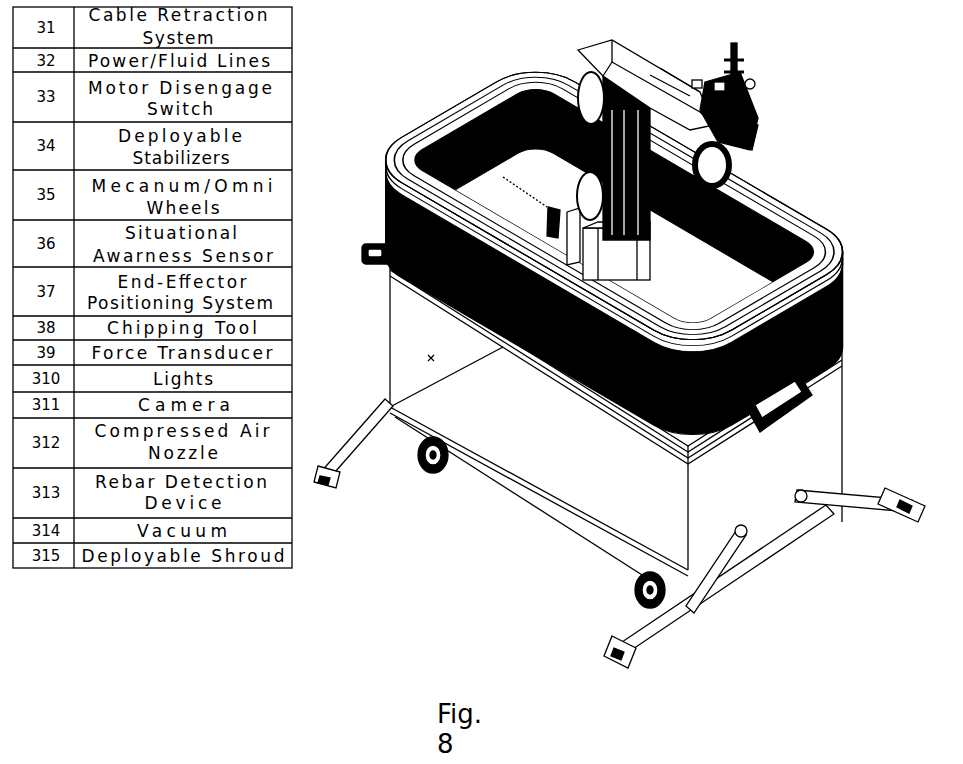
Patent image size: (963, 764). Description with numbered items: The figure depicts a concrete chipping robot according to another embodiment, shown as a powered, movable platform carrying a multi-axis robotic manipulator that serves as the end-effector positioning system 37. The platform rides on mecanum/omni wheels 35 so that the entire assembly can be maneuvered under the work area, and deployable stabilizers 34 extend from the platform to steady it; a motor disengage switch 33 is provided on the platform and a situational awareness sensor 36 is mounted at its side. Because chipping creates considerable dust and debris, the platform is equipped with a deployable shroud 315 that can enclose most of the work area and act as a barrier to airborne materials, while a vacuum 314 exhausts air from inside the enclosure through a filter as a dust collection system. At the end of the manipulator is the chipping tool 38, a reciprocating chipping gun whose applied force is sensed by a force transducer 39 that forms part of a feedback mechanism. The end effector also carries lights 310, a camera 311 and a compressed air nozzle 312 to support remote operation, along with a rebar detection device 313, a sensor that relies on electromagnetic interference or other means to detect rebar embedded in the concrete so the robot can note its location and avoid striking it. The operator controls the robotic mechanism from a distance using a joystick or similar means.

The motor disengage switch 33 is at (351, 229).
The deployable stabilizers 34 is at (616, 505).
The mecanum/omni wheels 35 is at (487, 522).
The situational awareness sensor 36 is at (821, 361).
The end-effector positioning system 37 is at (708, 151).
The chipping tool 38 is at (815, 124).
The force transducer 39 is at (784, 56).
The lights 310 is at (813, 67).
The camera 311 is at (702, 57).
The compressed air nozzle 312 is at (661, 55).
The rebar detection device 313 is at (798, 163).
The vacuum 314 is at (603, 223).
The deployable shroud 315 is at (614, 253).